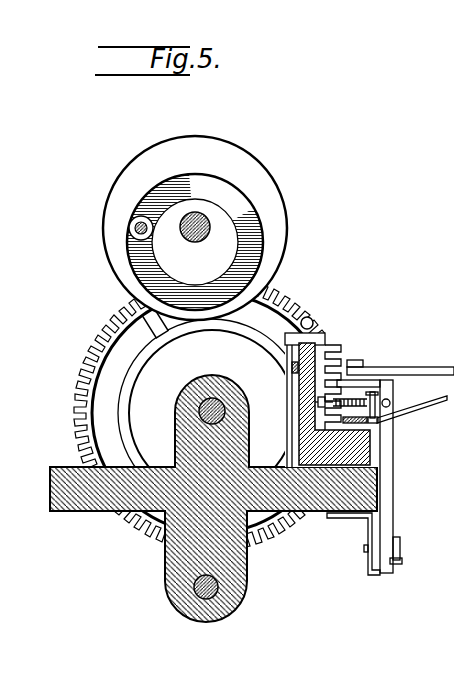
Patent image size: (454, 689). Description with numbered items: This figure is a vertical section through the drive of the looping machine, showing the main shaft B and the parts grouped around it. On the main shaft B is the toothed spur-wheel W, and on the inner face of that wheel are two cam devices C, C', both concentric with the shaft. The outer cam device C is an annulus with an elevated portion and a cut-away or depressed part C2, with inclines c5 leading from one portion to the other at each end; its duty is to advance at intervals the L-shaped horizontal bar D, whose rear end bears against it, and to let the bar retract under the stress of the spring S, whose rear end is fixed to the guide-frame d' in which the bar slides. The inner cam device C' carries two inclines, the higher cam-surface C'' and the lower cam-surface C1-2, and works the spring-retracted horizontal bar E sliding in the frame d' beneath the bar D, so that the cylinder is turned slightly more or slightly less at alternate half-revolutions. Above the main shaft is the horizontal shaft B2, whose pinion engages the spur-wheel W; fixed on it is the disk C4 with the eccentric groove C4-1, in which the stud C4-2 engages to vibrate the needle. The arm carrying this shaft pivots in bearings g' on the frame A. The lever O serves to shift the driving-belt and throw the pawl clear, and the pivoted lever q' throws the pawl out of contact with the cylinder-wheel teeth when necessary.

The disk C4 is at (219, 151).
The eccentric groove C4-1 is at (163, 194).
The stud C4-2 is at (129, 228).
The horizontal shaft B2 is at (200, 241).
The cam device C is at (212, 406).
The depressed part C2 is at (202, 413).
The toothed spur-wheel W is at (129, 315).
The incline c5 is at (143, 323).
The higher cam-surface C'' is at (212, 413).
The cam device C' is at (212, 413).
The main shaft B is at (213, 400).
The frame base A is at (105, 511).
The bearings g' is at (230, 568).
The L-shaped horizontal bar D is at (333, 355).
The lower cam-surface C1-2 is at (299, 432).
The horizontal bar E is at (297, 401).
The guide-frame d' is at (342, 376).
The spring S is at (313, 323).
The lever O is at (422, 372).
The pivoted lever q' is at (387, 477).